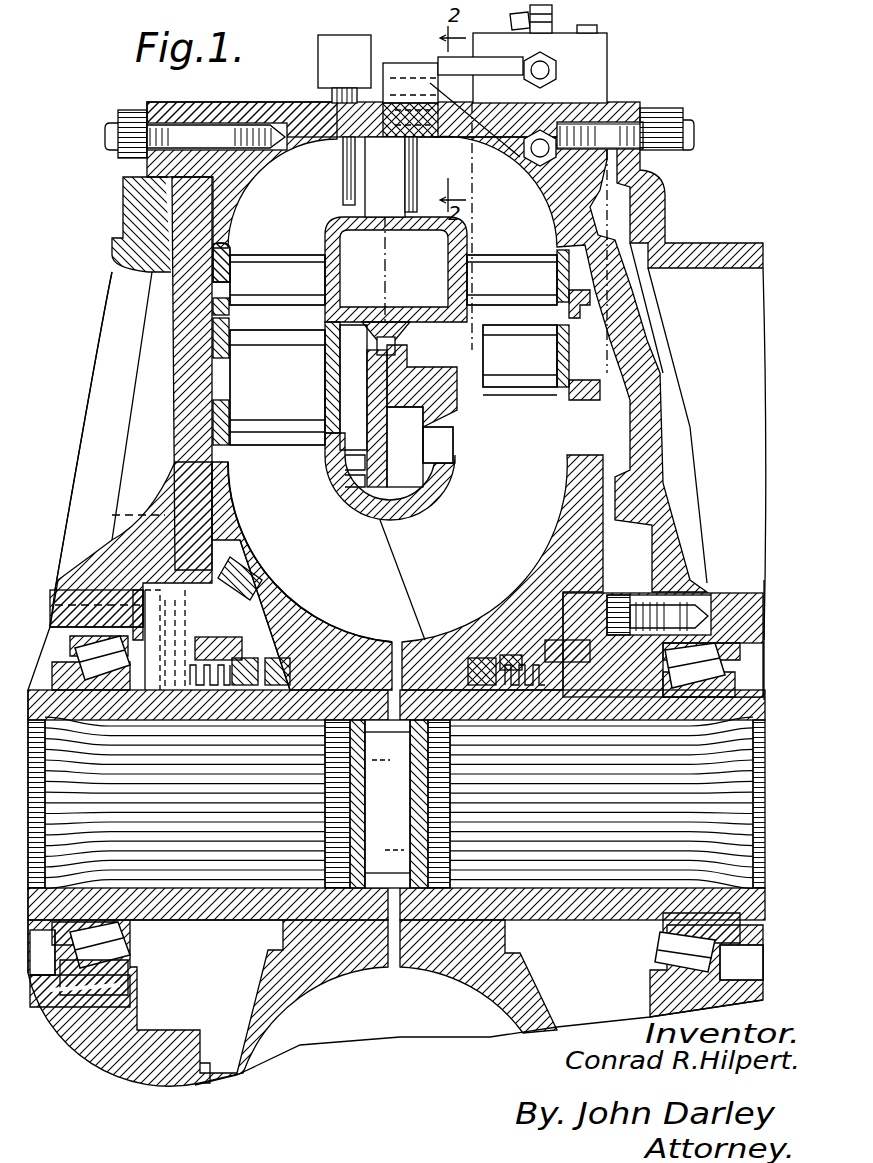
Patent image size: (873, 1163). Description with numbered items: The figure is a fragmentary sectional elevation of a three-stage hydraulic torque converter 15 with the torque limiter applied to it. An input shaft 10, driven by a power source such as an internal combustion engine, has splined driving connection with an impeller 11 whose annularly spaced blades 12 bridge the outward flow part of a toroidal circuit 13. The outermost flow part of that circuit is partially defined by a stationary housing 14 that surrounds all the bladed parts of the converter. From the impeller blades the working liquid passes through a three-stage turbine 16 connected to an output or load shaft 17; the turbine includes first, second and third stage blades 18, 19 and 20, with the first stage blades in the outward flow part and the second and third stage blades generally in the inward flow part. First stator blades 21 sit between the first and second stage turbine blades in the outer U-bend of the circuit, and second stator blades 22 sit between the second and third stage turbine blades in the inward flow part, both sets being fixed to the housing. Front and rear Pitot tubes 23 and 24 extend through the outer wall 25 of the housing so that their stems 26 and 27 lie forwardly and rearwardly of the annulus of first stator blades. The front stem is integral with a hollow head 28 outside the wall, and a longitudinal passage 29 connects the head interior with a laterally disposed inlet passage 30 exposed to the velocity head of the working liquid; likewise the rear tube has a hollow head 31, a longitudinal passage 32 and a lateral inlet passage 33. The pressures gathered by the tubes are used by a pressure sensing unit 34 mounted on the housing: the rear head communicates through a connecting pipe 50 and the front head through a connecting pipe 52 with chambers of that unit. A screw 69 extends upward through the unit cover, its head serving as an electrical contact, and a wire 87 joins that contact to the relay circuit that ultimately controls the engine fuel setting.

The input shaft 10 is at (200, 878).
The impeller 11 is at (290, 612).
The impeller blades 12 is at (285, 391).
The toroidal circuit 13 is at (296, 530).
The stationary housing 14 is at (175, 350).
The converter 15 is at (112, 209).
The three-stage turbine 16 is at (230, 250).
The output or load shaft 17 is at (578, 870).
The first stage turbine blades 18 is at (275, 290).
The second stage turbine blades 19 is at (522, 285).
The third stage turbine blades 20 is at (508, 489).
The first stator blades 21 is at (393, 184).
The second stator blades 22 is at (521, 366).
The front Pitot tube 23 is at (305, 46).
The rear Pitot tube 24 is at (398, 62).
The outer wall 25 is at (272, 103).
The stem 26 is at (340, 163).
The stem 27 is at (522, 150).
The hollow head 28 is at (353, 70).
The longitudinal passage 29 is at (342, 176).
The inlet passage 30 is at (345, 196).
The hollow head 31 is at (412, 97).
The longitudinal passage 32 is at (425, 183).
The inlet passage 33 is at (405, 201).
The pressure sensing unit 34 is at (607, 54).
The connecting pipe 50 is at (476, 95).
The connecting pipe 52 is at (497, 62).
The screw 69 is at (555, 16).
The wire 87 is at (510, 17).